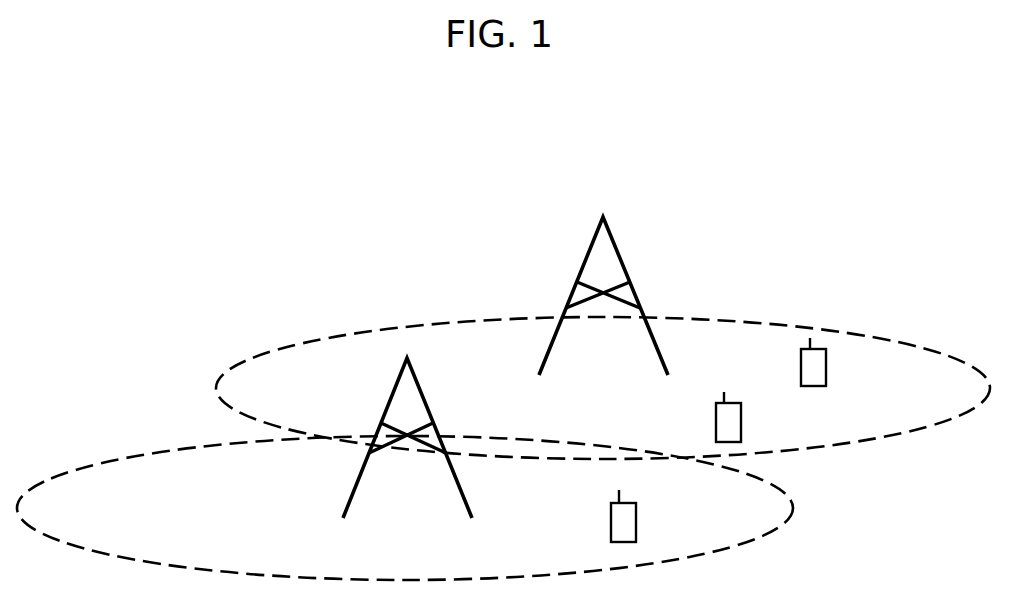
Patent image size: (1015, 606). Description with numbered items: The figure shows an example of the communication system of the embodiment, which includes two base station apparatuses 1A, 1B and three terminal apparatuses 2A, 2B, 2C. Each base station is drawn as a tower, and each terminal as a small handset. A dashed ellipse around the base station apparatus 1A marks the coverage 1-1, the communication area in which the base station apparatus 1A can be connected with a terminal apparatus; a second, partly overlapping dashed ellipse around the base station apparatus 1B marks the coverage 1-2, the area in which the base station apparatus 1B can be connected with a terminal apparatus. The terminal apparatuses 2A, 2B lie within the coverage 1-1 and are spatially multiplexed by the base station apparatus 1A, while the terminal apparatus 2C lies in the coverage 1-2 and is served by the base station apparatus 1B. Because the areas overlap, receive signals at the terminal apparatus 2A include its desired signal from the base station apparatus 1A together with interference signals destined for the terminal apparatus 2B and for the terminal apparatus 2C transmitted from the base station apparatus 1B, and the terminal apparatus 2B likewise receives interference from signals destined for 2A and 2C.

The coverage 1-1 is at (317, 340).
The coverage 1-2 is at (137, 456).
The base station apparatus 1A is at (594, 233).
The base station apparatus 1B is at (392, 393).
The terminal apparatus 2A is at (826, 357).
The terminal apparatus 2B is at (741, 412).
The terminal apparatus 2C is at (636, 512).